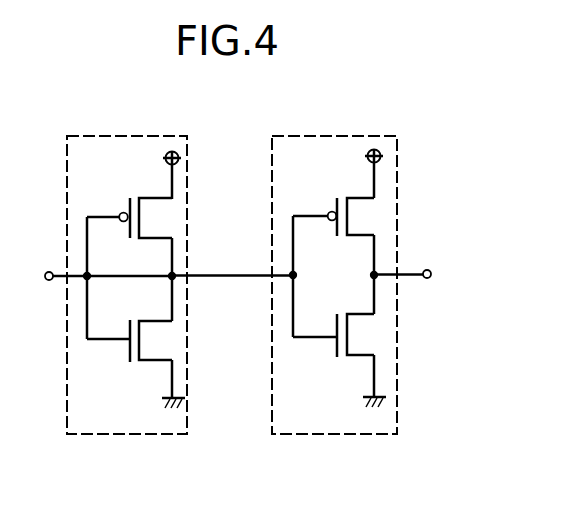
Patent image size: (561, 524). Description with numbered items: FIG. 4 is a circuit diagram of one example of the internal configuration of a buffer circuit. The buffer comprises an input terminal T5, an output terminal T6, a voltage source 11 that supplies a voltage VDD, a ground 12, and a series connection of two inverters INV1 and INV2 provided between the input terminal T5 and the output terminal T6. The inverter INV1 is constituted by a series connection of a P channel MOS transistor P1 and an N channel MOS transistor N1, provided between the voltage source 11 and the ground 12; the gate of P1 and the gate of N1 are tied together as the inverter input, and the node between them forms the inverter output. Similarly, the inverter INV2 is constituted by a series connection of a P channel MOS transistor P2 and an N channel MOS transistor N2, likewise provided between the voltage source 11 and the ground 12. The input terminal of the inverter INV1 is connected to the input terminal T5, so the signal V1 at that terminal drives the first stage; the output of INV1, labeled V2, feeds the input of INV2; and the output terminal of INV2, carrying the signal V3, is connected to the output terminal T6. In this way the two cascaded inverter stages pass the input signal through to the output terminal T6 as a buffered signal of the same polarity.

The voltage source 11 is at (166, 155).
The ground 12 is at (160, 400).
The P channel MOS transistor P1 is at (163, 197).
The N channel MOS transistor N1 is at (163, 365).
The P channel MOS transistor P2 is at (365, 197).
The N channel MOS transistor N2 is at (365, 362).
The inverter INV1 is at (123, 437).
The inverter INV2 is at (317, 437).
The input terminal T5 is at (47, 271).
The output terminal T6 is at (427, 283).
The input voltage node V1 is at (97, 278).
The intermediate voltage node V2 is at (234, 266).
The output voltage node V3 is at (405, 262).
The voltage VDD is at (317, 162).